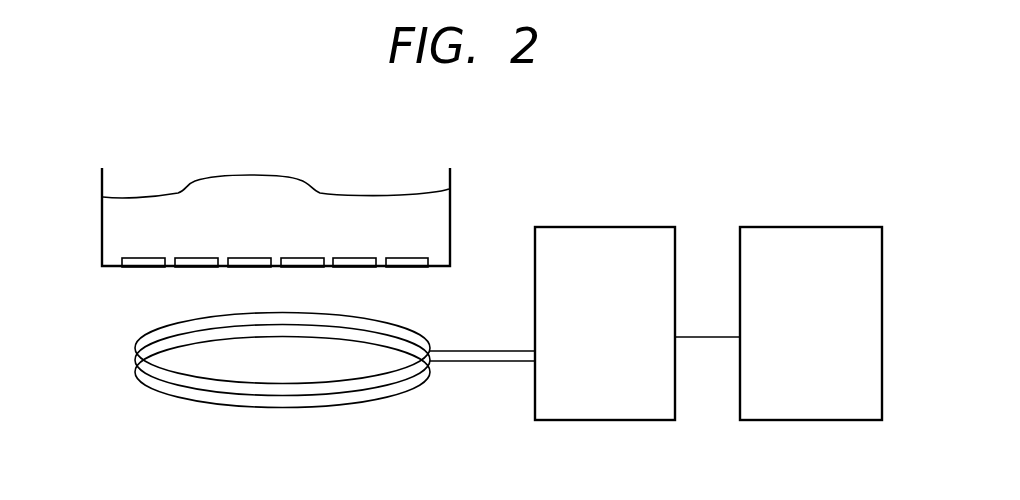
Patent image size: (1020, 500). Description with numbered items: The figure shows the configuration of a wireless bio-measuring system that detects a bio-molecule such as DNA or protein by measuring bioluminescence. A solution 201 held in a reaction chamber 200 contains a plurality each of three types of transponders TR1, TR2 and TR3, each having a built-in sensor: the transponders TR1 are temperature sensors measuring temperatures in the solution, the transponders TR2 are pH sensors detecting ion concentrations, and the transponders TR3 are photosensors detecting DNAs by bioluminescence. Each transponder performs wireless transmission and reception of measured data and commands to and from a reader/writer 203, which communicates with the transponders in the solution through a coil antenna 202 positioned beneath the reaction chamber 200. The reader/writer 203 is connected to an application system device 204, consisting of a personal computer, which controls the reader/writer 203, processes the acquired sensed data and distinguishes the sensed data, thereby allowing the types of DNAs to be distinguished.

The reaction chamber 200 is at (450, 204).
The solution 201 is at (407, 211).
The coil antenna 202 is at (163, 392).
The reader/writer 203 is at (612, 227).
The application system device 204 is at (815, 227).
The transponder TR1 is at (141, 268).
The transponder TR2 is at (250, 261).
The transponder TR3 is at (357, 261).